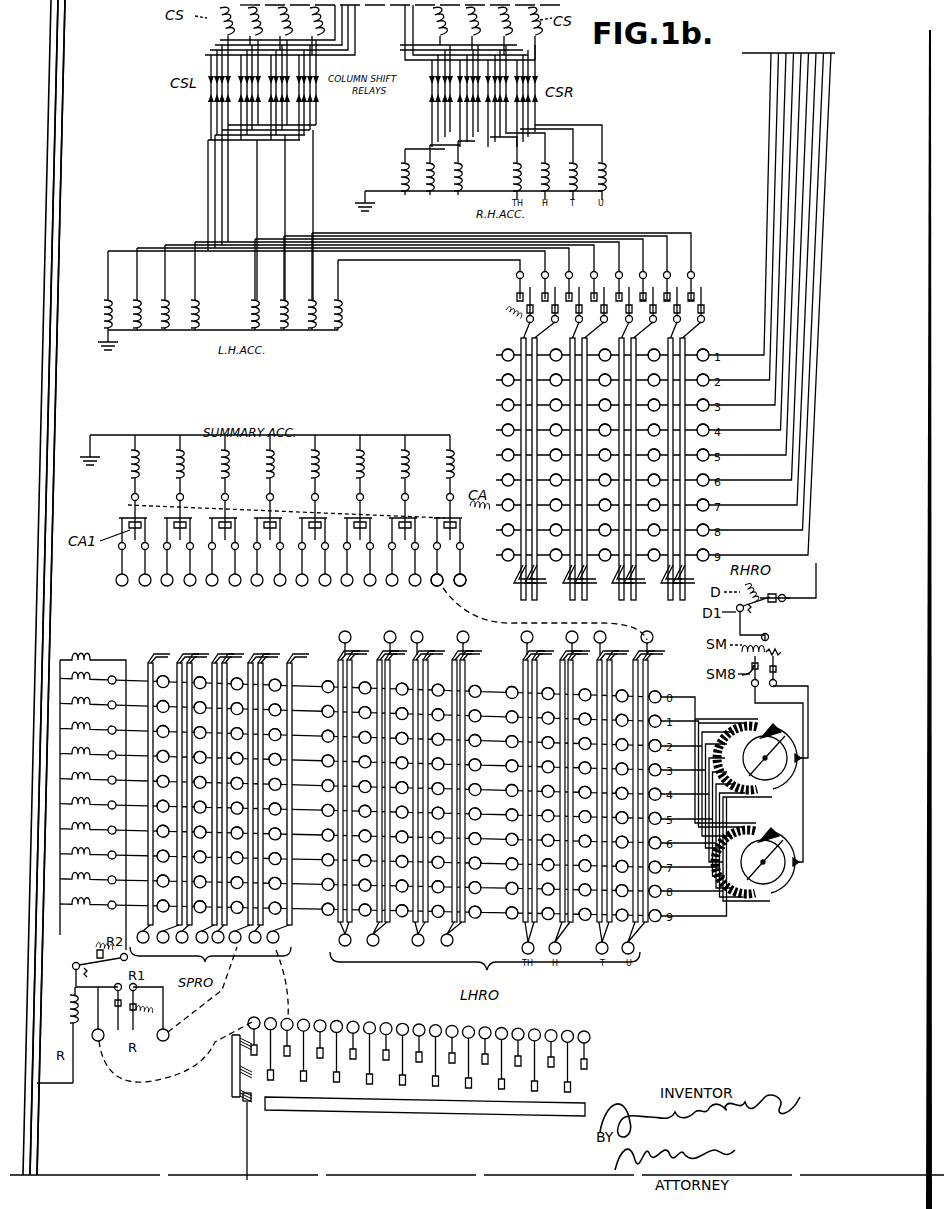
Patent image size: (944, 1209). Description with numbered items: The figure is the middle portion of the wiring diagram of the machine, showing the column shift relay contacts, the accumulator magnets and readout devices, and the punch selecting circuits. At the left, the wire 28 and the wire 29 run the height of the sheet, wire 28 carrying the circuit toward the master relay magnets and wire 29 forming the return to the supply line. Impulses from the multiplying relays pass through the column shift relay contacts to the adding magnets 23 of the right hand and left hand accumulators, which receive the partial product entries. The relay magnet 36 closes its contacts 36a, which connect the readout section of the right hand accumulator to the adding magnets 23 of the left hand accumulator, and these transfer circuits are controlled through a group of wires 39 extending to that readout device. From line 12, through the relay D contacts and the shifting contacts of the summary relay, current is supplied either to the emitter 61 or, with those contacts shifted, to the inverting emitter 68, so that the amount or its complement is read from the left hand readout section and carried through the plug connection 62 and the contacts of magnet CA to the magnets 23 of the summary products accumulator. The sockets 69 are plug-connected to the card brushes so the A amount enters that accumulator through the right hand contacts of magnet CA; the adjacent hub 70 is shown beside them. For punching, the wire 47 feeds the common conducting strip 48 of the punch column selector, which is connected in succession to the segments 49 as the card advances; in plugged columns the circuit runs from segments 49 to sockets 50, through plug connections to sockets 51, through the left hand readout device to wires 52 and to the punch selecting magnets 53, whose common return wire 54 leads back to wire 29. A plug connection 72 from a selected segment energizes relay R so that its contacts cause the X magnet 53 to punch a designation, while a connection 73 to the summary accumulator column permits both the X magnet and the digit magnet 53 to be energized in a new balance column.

The wire 28 is at (58, 1125).
The wire 29 is at (58, 1147).
The adding magnets 23 is at (445, 470).
The group of wires 39 is at (788, 160).
The relay magnet 36 is at (508, 312).
The contacts 36a is at (695, 302).
The line 12 is at (818, 582).
The punch selecting magnets 53 is at (86, 658).
The common return wire 54 is at (48, 946).
The sockets 69 is at (466, 582).
The terminal hub 70 is at (432, 588).
The plug connection 62 is at (516, 624).
The inverting emitter 68 is at (773, 782).
The emitter 61 is at (771, 886).
The wires 52 is at (282, 962).
The sockets 51 is at (628, 958).
The sockets 50 is at (445, 1025).
The segments 49 is at (572, 1086).
The common conducting strip 48 is at (305, 1100).
The wire 47 is at (247, 1168).
The plug connection 72 is at (145, 1082).
The connection 73 is at (212, 988).